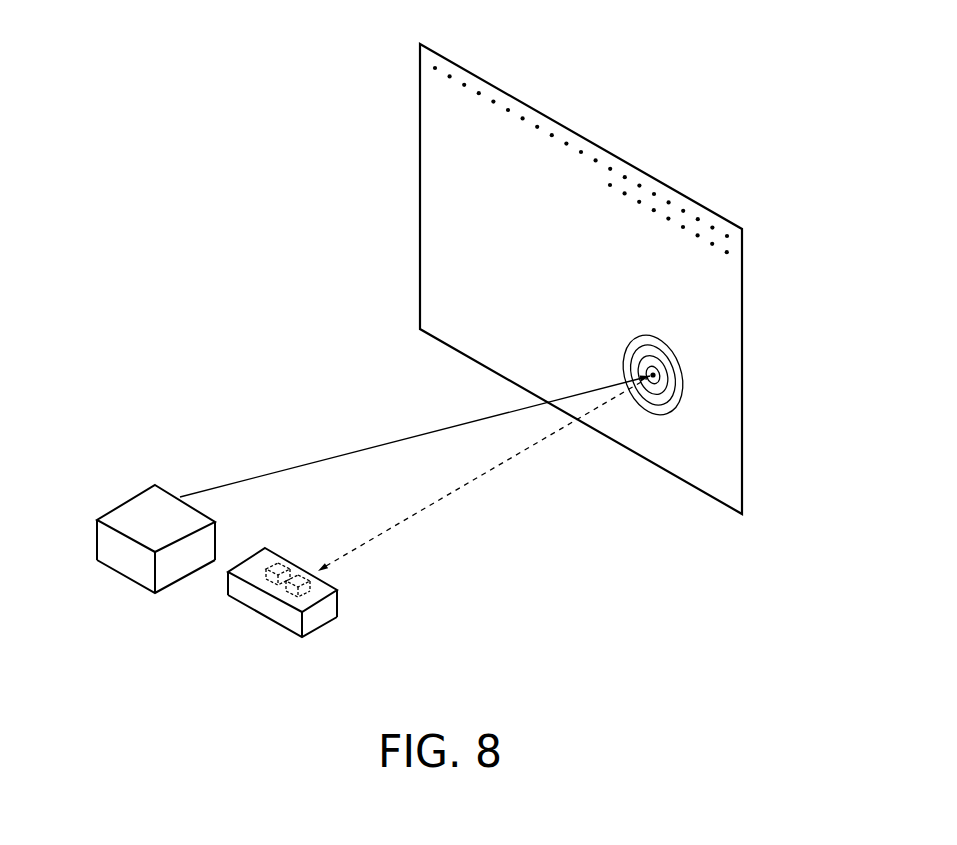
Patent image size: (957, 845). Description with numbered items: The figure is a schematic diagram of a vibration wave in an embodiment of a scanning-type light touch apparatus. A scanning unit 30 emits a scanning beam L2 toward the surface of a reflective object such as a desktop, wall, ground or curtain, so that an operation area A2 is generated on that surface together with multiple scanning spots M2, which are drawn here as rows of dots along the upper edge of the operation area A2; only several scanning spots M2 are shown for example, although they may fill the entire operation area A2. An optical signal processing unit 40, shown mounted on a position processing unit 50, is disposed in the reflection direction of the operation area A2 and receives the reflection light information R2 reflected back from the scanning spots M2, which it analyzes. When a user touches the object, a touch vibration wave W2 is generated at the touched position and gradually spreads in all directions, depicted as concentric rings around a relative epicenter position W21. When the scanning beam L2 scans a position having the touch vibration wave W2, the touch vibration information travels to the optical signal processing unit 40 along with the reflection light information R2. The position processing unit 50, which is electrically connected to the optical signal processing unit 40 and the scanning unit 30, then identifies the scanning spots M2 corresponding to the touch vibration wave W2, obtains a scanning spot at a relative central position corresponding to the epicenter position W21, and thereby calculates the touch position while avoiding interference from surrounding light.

The scanning spots M2 is at (478, 93).
The operation area A2 is at (713, 262).
The touch vibration wave W2 is at (692, 372).
The relative epicenter position W21 is at (655, 377).
The scanning beam L2 is at (350, 450).
The reflection light information R2 is at (443, 500).
The scanning unit 30 is at (123, 577).
The optical signal processing unit 40 is at (267, 589).
The position processing unit 50 is at (288, 603).